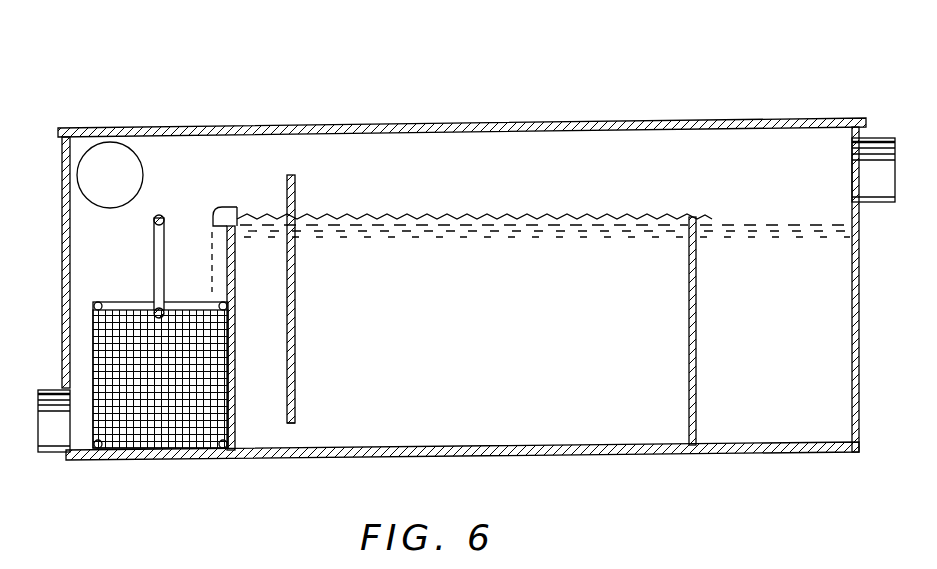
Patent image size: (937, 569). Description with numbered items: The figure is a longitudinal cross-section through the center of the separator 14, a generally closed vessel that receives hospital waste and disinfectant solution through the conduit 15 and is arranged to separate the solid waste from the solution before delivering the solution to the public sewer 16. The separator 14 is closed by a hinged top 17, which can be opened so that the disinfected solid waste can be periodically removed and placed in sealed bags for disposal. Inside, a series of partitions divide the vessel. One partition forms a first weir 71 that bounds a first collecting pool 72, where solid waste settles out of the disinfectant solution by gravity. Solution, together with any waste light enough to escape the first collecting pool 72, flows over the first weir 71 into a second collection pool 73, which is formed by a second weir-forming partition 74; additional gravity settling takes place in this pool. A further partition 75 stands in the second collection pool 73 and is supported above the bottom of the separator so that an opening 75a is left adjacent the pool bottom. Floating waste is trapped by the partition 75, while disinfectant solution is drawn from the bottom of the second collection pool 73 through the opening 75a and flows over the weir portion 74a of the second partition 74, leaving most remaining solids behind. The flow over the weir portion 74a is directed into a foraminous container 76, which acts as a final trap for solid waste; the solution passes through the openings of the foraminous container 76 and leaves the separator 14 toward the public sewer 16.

The separator 14 is at (462, 237).
The conduit 15 is at (881, 138).
The public sewer 16 is at (50, 423).
The hinged top 17 is at (340, 125).
The first weir 71 is at (690, 306).
The first collecting pool 72 is at (787, 330).
The second collection pool 73 is at (500, 334).
The second weir-forming partition 74 is at (239, 307).
The weir portion 74a is at (225, 228).
The partition 75 is at (291, 196).
The opening 75a is at (296, 437).
The foraminous container 76 is at (143, 302).